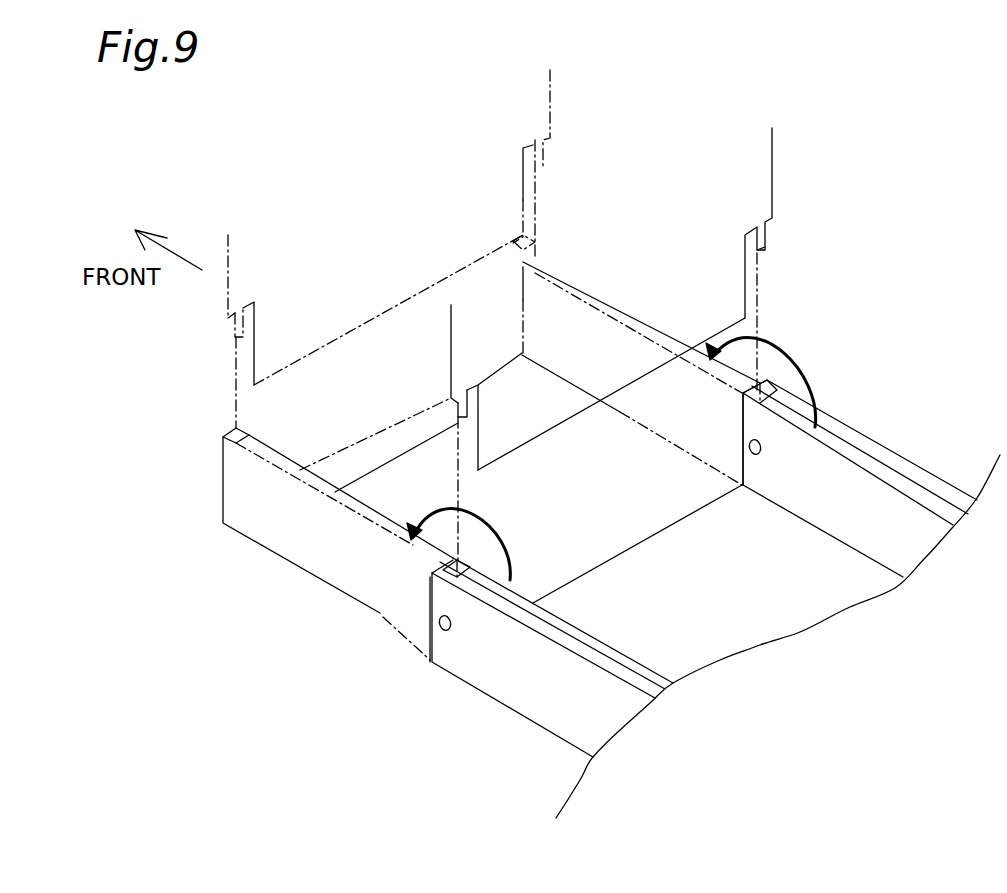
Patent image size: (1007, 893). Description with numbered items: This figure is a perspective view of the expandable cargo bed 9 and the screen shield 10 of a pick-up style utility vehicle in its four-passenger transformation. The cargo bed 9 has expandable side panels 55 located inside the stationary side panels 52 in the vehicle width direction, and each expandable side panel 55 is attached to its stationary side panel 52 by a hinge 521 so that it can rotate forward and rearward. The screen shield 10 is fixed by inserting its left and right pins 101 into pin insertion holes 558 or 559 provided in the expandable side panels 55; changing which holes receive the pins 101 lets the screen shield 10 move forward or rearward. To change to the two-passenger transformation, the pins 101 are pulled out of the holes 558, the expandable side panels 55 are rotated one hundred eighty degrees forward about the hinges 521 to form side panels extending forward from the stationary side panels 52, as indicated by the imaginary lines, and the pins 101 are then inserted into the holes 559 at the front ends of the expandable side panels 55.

The cargo bed 9 is at (758, 620).
The screen shield 10 is at (402, 195).
The pin 101 is at (543, 155).
The stationary side panel 52 is at (547, 687).
The expandable side panel 55 is at (592, 645).
The hinge 521 is at (445, 632).
The pin insertion hole 558 is at (430, 577).
The pin insertion hole 559 is at (223, 437).